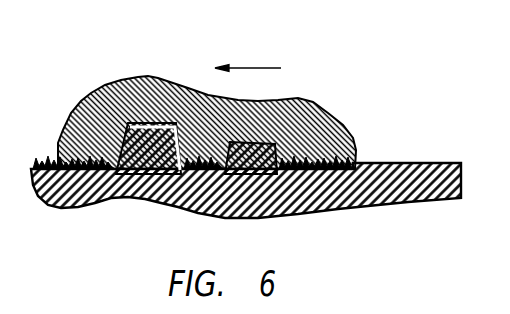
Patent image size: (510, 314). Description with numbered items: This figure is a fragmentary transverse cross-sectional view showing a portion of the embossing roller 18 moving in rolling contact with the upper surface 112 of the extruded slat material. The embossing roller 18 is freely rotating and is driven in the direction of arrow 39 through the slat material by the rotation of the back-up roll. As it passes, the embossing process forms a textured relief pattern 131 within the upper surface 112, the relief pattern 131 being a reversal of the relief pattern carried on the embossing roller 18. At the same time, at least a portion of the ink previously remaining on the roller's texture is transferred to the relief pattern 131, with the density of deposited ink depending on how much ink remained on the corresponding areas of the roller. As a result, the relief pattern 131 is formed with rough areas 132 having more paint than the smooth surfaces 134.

The embossing roller 18 is at (319, 104).
The upper surface 112 is at (394, 154).
The textured relief pattern 131 is at (28, 158).
The rough areas 132 is at (83, 160).
The smooth surfaces 134 is at (143, 117).
The arrow 39 is at (249, 60).